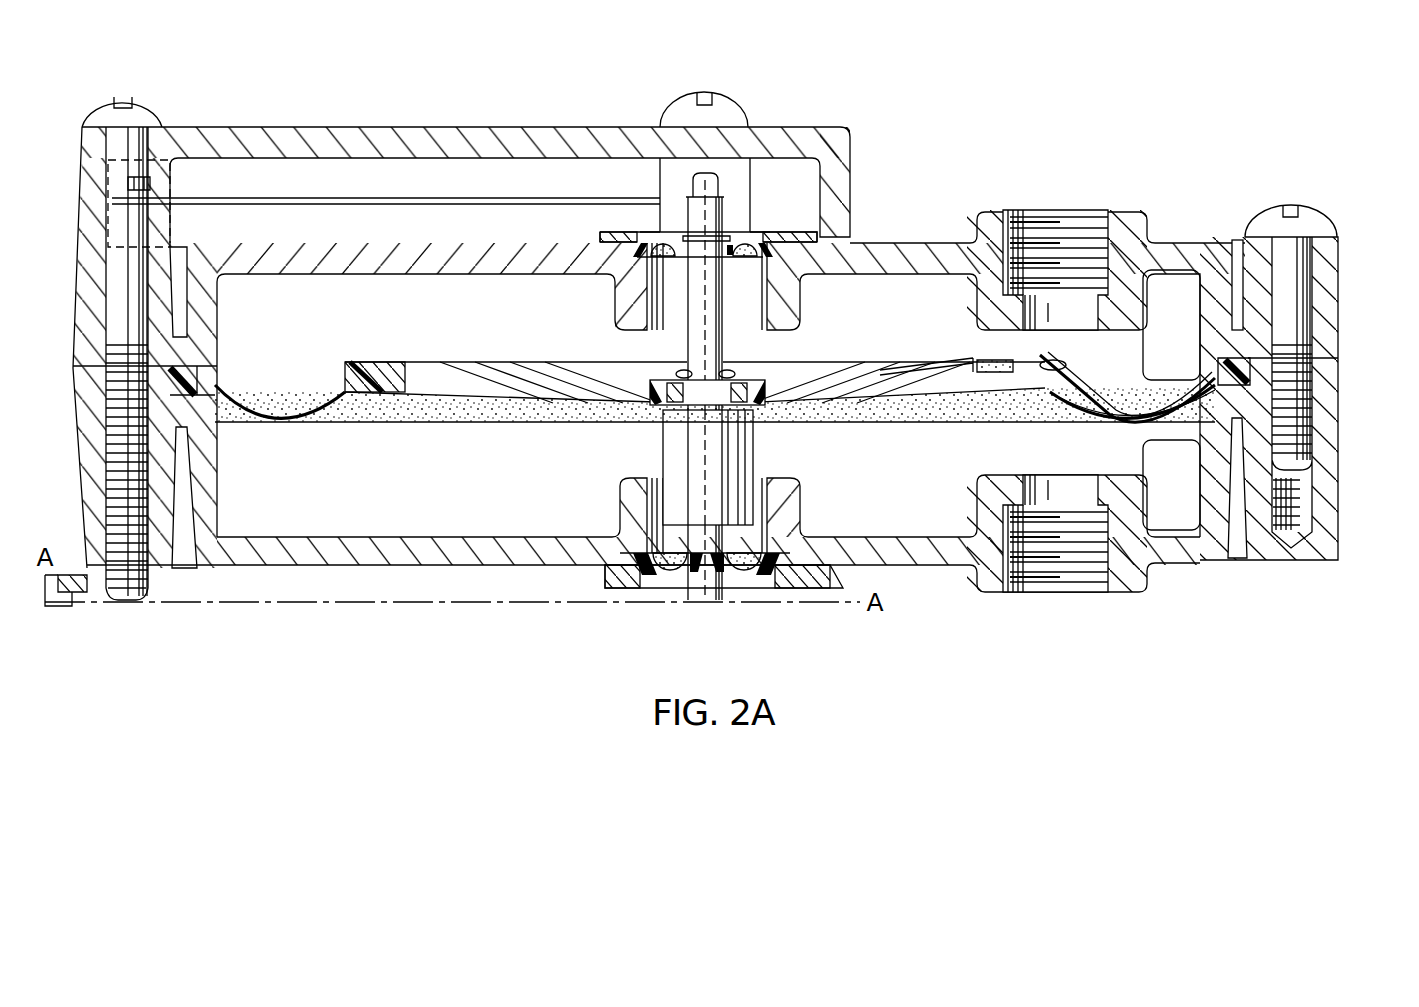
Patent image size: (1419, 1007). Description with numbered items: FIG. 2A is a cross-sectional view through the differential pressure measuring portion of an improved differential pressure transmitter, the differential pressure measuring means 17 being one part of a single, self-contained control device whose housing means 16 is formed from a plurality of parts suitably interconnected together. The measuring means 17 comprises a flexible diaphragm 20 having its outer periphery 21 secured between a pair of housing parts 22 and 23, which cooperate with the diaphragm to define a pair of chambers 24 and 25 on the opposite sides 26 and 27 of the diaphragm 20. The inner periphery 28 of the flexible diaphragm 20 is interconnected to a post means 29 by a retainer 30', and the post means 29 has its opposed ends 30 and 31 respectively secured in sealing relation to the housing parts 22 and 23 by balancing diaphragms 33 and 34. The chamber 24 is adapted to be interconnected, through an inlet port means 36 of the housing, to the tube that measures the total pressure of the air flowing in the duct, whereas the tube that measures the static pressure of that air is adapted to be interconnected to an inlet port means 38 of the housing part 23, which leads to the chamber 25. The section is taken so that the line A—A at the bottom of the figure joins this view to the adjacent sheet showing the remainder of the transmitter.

The housing means 16 is at (63, 595).
The differential pressure measuring means 17 is at (931, 130).
The flexible diaphragm 20 is at (1093, 378).
The outer periphery 21 is at (1230, 388).
The housing part 22 is at (1333, 318).
The housing part 23 is at (1330, 487).
The chamber 24 is at (877, 280).
The chamber 25 is at (922, 517).
The side of the diaphragm 26 is at (1133, 397).
The side of the diaphragm 27 is at (1143, 415).
The inner periphery 28 is at (1015, 392).
The post means 29 is at (710, 388).
The end of the post means 30 is at (718, 386).
The retainer 30' is at (973, 345).
The end of the post means 31 is at (695, 540).
The balancing diaphragm 33 is at (748, 229).
The balancing diaphragm 34 is at (758, 545).
The inlet port means 36 is at (1095, 230).
The inlet port means 38 is at (1110, 567).